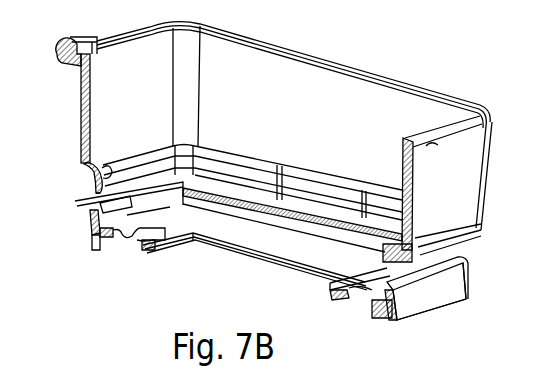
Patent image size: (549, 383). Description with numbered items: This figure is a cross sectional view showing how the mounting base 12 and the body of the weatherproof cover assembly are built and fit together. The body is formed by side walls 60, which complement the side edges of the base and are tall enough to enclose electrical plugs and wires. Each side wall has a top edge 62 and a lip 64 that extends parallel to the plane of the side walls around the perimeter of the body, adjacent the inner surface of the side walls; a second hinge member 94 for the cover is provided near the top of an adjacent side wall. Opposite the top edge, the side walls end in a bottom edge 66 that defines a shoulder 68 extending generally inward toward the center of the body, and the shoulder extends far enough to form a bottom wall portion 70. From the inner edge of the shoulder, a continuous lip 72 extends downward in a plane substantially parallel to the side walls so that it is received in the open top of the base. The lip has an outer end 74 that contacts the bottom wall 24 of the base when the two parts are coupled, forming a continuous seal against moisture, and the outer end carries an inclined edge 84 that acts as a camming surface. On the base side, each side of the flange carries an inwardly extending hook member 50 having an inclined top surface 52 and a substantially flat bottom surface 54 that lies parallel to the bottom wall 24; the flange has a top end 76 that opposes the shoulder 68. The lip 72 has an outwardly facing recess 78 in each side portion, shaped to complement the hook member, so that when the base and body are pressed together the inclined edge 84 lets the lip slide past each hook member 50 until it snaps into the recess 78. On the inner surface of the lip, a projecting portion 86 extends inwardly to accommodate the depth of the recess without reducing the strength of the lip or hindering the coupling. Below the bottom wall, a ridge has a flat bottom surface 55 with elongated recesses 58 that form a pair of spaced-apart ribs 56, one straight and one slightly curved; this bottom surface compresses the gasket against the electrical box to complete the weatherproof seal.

The mounting base 12 is at (468, 295).
The bottom wall 24 is at (302, 258).
The hook member 50 is at (147, 211).
The inclined top surface 52 is at (92, 221).
The flat bottom surface 54 is at (91, 236).
The bottom surface 55 is at (413, 317).
The ribs 56 is at (93, 248).
The elongated recesses 58 is at (97, 250).
The side walls 60 is at (78, 118).
The top edge 62 is at (437, 147).
The lip 64 is at (385, 72).
The bottom edge 66 is at (87, 162).
The shoulder 68 is at (90, 170).
The bottom wall portion 70 is at (103, 160).
The lip 72 is at (460, 238).
The outer end 74 is at (96, 191).
The top end 76 is at (88, 208).
The outwardly facing recess 78 is at (430, 265).
The inclined edge 84 is at (97, 188).
The projecting portion 86 is at (132, 157).
The second hinge member 94 is at (66, 40).